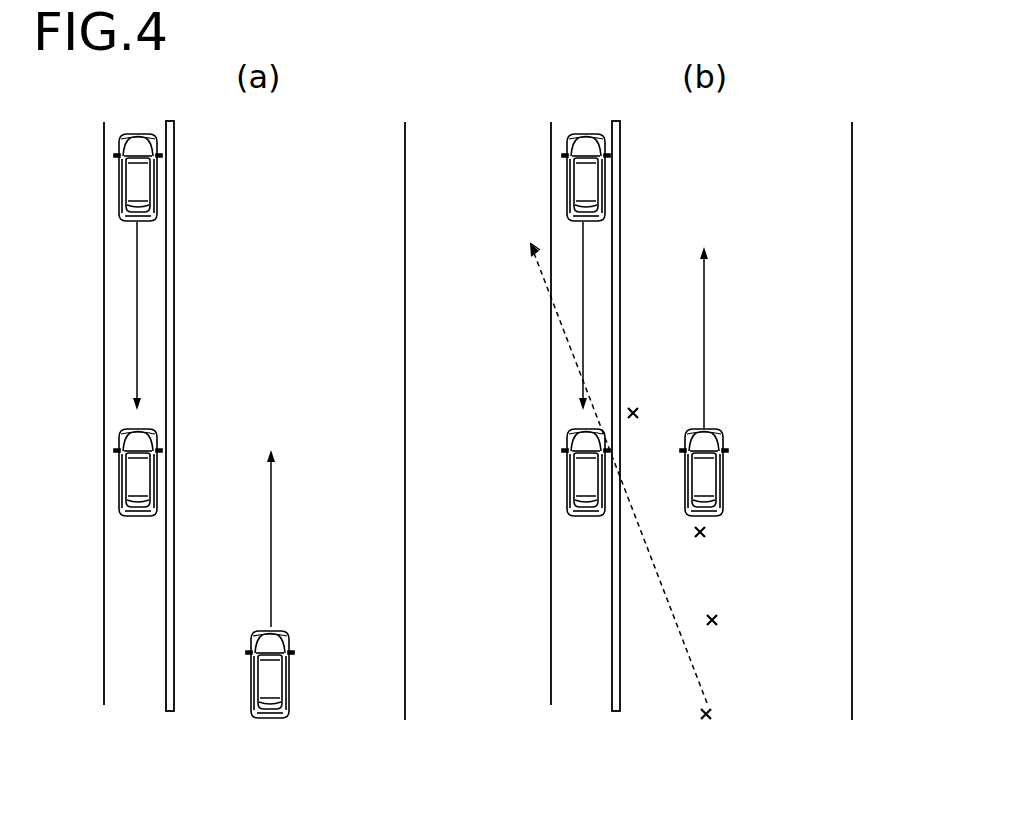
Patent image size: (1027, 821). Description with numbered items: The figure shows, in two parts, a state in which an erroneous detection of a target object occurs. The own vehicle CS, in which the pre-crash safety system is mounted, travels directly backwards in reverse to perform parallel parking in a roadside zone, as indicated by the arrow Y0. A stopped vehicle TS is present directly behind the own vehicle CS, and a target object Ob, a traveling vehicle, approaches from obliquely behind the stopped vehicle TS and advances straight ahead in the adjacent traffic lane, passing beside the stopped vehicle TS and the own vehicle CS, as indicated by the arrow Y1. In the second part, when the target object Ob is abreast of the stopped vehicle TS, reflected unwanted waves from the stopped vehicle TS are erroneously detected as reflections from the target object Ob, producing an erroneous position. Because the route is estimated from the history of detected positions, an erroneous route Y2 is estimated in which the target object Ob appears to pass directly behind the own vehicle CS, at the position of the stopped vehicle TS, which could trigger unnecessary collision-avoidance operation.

The own vehicle CS is at (117, 187).
The stopped vehicle TS is at (117, 477).
The target object Ob is at (293, 662).
The arrow indicating reverse travel of own vehicle Y0 is at (137, 353).
The arrow indicating travel of target object Y1 is at (272, 518).
The erroneous route Y2 is at (662, 589).